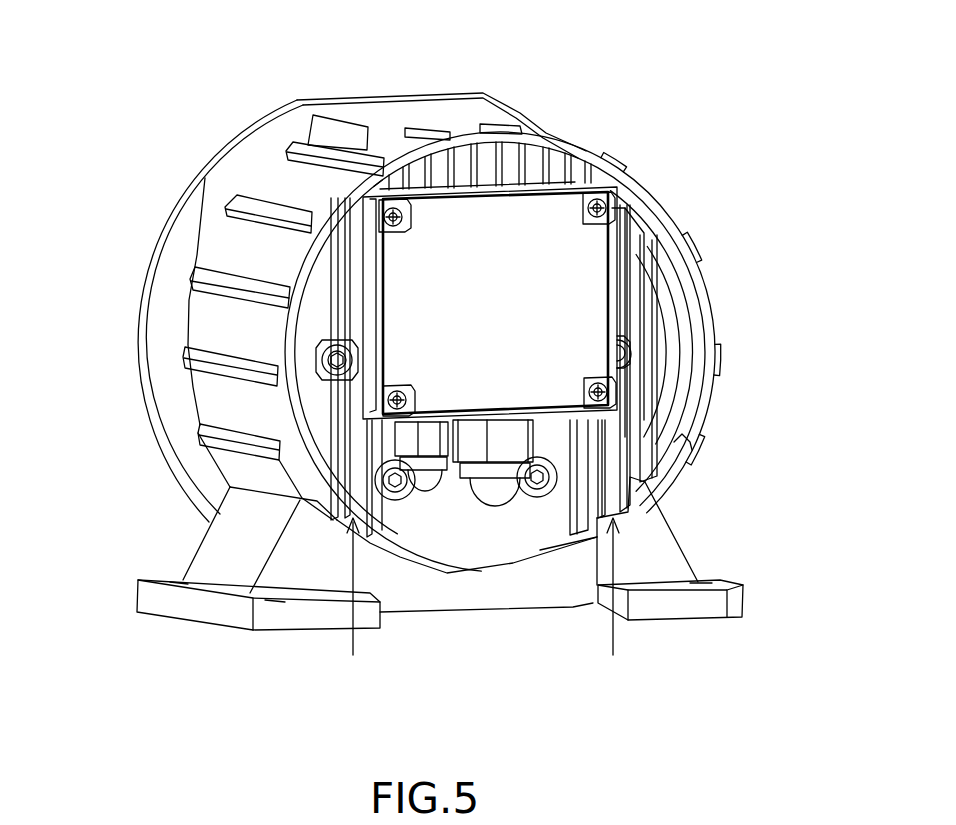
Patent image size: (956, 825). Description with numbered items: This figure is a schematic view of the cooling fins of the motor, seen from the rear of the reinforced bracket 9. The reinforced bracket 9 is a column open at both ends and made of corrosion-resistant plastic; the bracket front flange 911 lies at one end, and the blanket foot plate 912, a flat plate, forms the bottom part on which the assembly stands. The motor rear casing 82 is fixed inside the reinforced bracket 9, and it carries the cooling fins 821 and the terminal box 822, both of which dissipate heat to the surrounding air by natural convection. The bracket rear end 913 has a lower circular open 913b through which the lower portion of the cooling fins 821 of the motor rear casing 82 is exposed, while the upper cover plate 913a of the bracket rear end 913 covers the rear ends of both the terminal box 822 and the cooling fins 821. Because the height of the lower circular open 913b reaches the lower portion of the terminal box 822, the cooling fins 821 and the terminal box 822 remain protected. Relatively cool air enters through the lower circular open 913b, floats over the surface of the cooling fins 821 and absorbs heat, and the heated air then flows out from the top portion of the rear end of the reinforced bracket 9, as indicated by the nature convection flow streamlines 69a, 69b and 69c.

The reinforced bracket 9 is at (477, 88).
The bracket front flange 911 is at (247, 155).
The blanket foot plate 912 is at (160, 600).
The bracket rear end 913 is at (707, 328).
The upper cover plate 913a is at (718, 358).
The lower circular open 913b is at (683, 439).
The motor rear casing 82 is at (640, 246).
The cooling fins 821 is at (317, 413).
The terminal box 822 is at (347, 274).
The nature convection flow streamline 69a is at (358, 580).
The nature convection flow streamline 69b is at (600, 563).
The nature convection flow streamline 69c is at (458, 532).